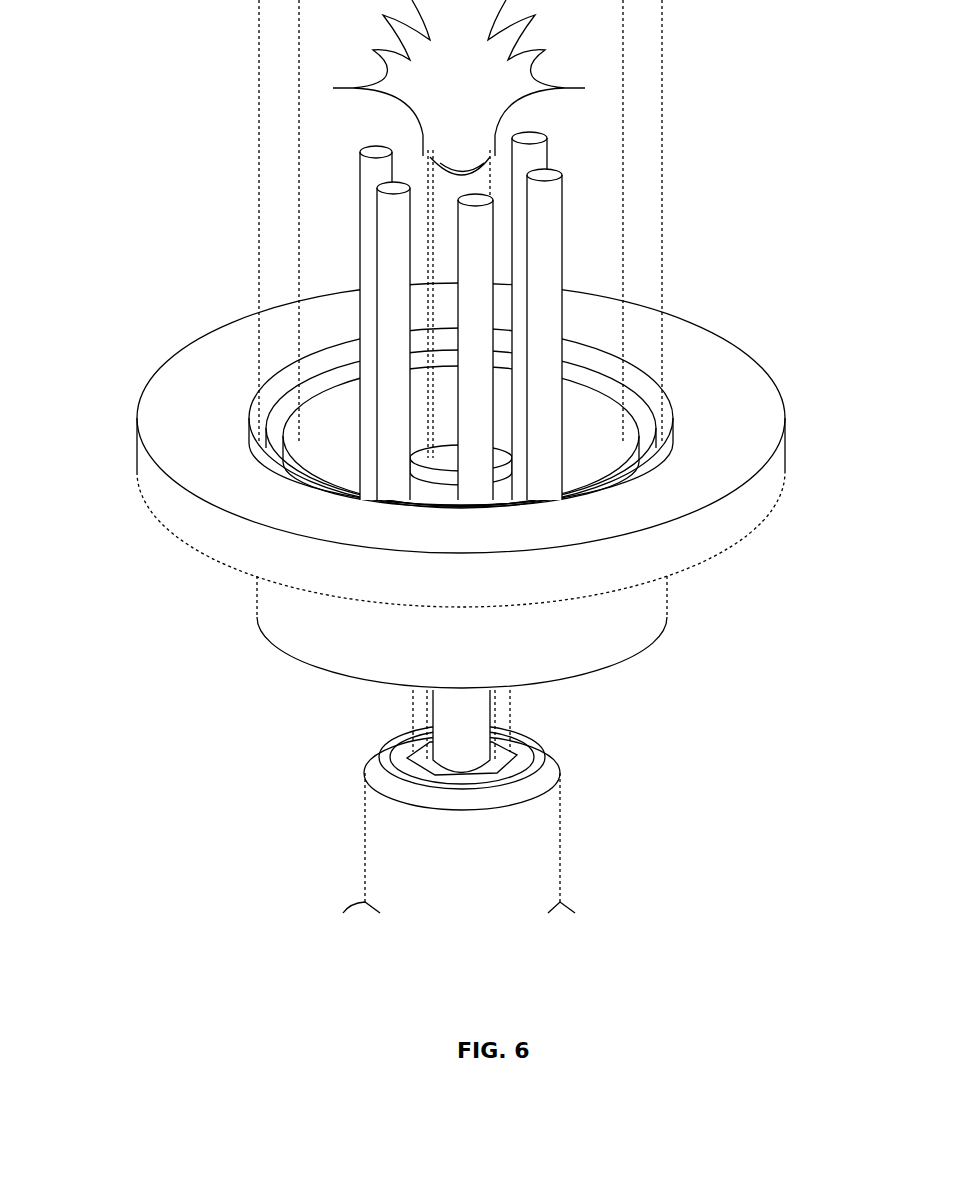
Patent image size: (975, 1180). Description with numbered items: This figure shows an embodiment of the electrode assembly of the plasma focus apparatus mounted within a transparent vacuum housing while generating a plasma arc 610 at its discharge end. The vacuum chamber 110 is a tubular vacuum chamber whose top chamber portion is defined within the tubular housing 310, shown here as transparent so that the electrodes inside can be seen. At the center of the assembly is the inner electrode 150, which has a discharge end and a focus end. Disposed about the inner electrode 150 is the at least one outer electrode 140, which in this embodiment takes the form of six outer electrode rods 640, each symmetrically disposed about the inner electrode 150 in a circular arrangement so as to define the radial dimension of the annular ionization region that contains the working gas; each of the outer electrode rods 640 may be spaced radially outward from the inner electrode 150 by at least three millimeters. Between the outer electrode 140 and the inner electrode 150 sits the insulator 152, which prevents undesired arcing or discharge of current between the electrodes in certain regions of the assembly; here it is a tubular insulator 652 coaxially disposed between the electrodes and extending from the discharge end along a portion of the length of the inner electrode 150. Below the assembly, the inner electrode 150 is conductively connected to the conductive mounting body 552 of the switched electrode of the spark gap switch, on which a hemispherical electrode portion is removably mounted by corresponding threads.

The vacuum chamber 110 is at (593, 85).
The tubular housing 310 is at (647, 220).
The light emitting portion 610 is at (430, 67).
The inner electrode 150 is at (440, 182).
The outer electrode 140 is at (319, 316).
The outer electrode rods 640 is at (385, 267).
The insulator 152 is at (566, 603).
The tubular insulator 652 is at (635, 522).
The conductive mounting body 552 is at (510, 840).